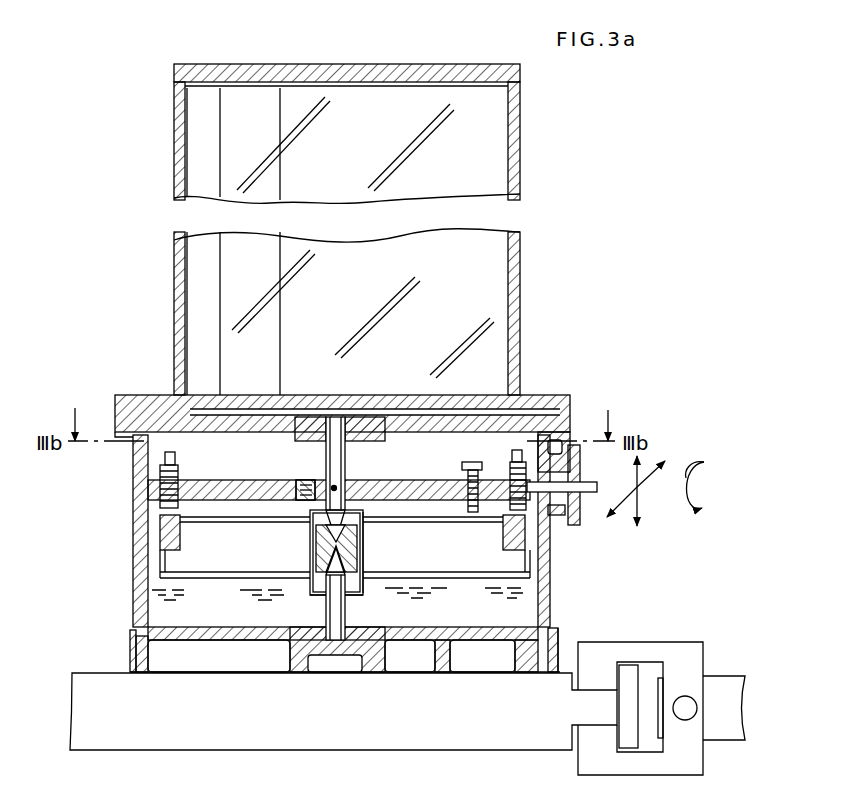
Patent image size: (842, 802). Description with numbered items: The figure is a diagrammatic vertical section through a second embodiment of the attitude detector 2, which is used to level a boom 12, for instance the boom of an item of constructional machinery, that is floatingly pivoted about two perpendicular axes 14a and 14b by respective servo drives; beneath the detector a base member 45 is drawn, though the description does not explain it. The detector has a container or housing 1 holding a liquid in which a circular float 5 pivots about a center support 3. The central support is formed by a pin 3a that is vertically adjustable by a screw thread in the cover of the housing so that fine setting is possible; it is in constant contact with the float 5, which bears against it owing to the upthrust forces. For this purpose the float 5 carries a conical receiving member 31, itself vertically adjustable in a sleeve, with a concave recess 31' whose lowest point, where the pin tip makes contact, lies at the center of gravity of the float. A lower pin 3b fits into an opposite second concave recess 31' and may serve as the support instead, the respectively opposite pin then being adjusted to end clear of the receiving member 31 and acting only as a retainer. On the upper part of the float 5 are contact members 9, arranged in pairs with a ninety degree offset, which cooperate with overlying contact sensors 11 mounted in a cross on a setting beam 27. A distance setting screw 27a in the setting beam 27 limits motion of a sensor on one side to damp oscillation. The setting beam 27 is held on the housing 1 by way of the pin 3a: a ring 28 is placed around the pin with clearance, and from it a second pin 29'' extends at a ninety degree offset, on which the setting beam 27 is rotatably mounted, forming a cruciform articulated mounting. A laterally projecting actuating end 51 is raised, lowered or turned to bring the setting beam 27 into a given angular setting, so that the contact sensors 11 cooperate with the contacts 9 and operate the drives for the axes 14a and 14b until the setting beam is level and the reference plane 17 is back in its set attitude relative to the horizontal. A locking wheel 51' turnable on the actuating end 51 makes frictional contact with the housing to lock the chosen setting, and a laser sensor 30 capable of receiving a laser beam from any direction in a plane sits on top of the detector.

The laser sensor 30 is at (508, 140).
The reference plane 17 is at (130, 396).
The locking wheel 51' is at (576, 418).
The container 1 is at (133, 610).
The float 5 is at (160, 572).
The setting beam 27 is at (248, 484).
The ring 28 is at (310, 480).
The second pin 29'' is at (287, 471).
The contact sensor 11 is at (170, 457).
The distance setting screw 27a is at (470, 462).
The pin 3a is at (347, 503).
The conical receiving member 31 is at (313, 552).
The concave recess 31' is at (391, 524).
The center support 3 is at (368, 566).
The lower pin 3b is at (326, 580).
The contact member 9 is at (160, 522).
The actuating end 51 is at (578, 485).
The attitude detector 2 is at (578, 595).
The base plate 45 is at (74, 727).
The boom 12 is at (380, 750).
The axis 14a is at (592, 712).
The axis 14b is at (683, 712).